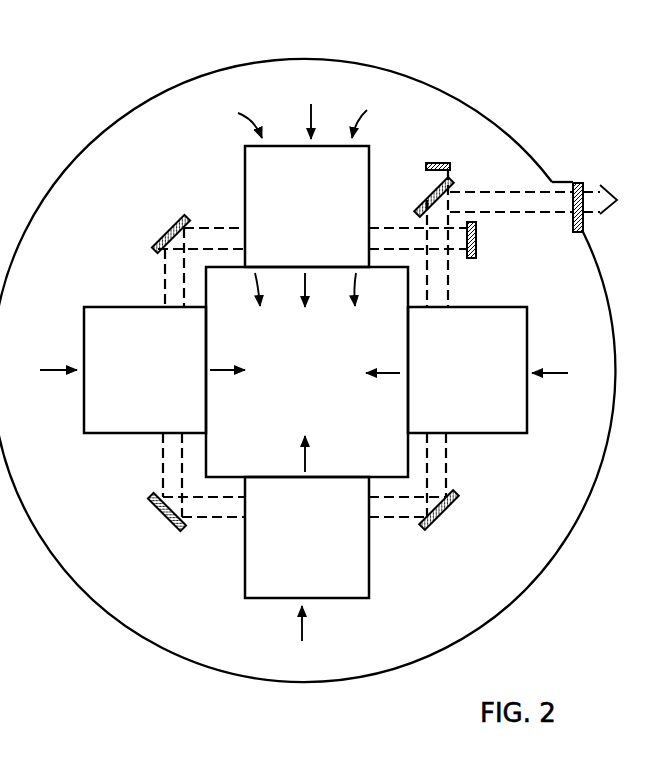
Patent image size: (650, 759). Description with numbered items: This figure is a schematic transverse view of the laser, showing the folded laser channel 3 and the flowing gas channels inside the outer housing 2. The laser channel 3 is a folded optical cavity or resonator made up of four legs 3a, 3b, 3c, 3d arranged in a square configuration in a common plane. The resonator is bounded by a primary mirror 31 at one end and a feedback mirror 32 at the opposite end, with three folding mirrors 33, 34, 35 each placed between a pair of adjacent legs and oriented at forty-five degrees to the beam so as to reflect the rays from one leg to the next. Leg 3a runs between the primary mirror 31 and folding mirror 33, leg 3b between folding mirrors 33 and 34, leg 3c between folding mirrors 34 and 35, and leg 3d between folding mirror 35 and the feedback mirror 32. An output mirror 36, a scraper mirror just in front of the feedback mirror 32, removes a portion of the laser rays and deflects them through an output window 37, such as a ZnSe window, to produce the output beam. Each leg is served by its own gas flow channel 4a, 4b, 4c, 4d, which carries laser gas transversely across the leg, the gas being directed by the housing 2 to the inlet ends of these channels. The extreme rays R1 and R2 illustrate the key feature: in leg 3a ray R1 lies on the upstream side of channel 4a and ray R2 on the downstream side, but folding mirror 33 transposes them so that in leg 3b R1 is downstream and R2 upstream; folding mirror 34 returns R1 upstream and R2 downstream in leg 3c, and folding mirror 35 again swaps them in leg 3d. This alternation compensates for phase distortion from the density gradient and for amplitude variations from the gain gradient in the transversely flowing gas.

The housing 2 is at (292, 61).
The laser channel 3 is at (196, 176).
The leg 3a is at (216, 231).
The leg 3b is at (171, 463).
The leg 3c is at (391, 516).
The leg 3d is at (450, 290).
The gas flow channel 4a is at (247, 166).
The gas flow channel 4b is at (85, 355).
The gas flow channel 4c is at (328, 597).
The gas flow channel 4d is at (527, 405).
The primary mirror 31 is at (477, 242).
The feedback mirror 32 is at (442, 160).
The folding mirror 33 is at (157, 241).
The folding mirror 34 is at (171, 524).
The folding mirror 35 is at (447, 511).
The output mirror 36 is at (424, 202).
The output window 37 is at (585, 216).
The extreme ray R1 is at (185, 285).
The extreme ray R2 is at (162, 300).